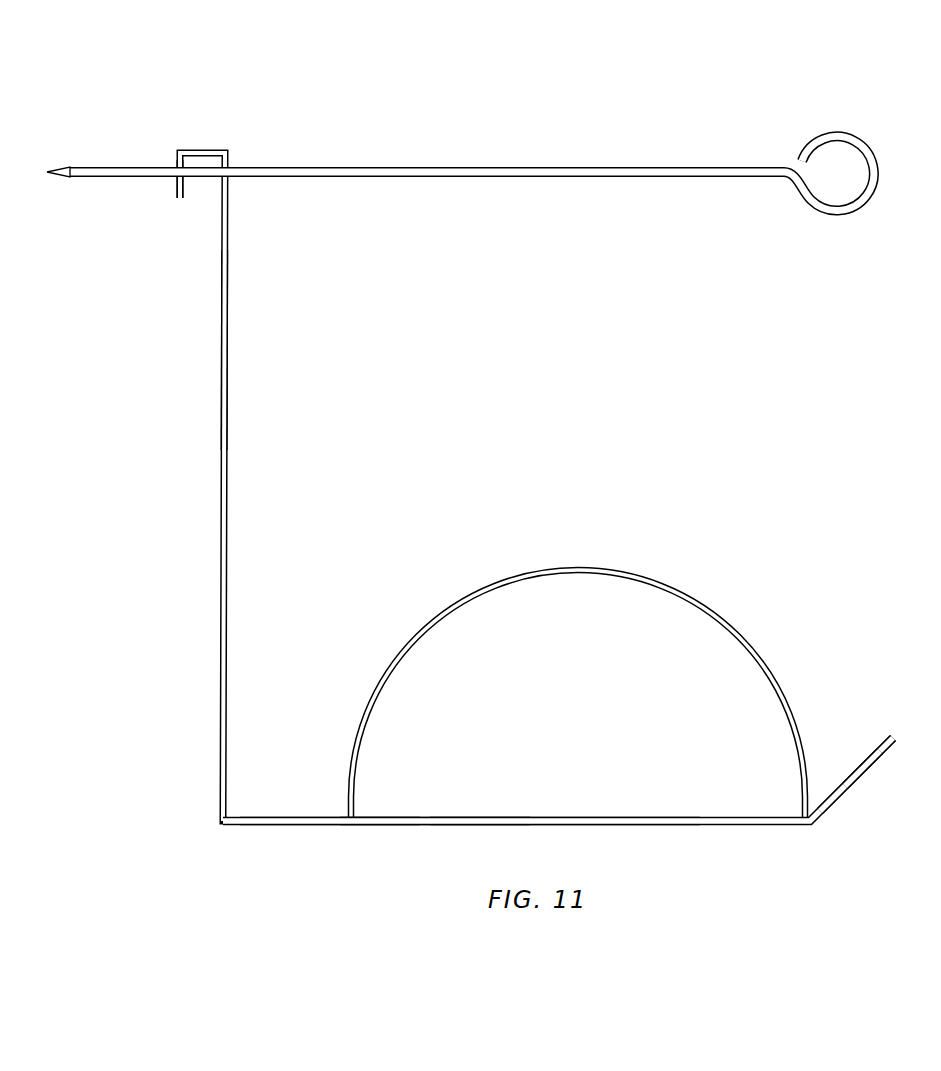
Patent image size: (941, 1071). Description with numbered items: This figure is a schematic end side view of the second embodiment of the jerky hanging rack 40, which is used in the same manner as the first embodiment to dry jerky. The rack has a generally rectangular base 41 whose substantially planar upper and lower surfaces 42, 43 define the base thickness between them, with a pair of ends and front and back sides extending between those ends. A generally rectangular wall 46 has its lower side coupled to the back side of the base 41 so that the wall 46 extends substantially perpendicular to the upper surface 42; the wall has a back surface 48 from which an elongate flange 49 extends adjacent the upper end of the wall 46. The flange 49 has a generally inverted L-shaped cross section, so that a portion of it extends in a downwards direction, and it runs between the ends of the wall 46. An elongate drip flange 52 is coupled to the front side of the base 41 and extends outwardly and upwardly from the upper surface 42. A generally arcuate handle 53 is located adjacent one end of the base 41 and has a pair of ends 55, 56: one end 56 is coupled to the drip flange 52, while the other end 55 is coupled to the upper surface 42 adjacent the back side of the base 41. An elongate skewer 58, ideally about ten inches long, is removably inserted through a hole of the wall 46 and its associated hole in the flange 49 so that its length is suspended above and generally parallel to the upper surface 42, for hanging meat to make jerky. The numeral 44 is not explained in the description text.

The second embodiment of the jerky hanging rack 40 is at (487, 469).
The base 41 is at (391, 833).
The upper surface 42 is at (463, 817).
The lower surface 43 is at (473, 826).
The free end of hook 44 is at (176, 195).
The wall 46 is at (515, 520).
The back surface 48 is at (221, 348).
The flange 49 is at (230, 368).
The drip flange 52 is at (876, 768).
The handle 53 is at (612, 566).
The end 55 is at (262, 816).
The end 56 is at (858, 756).
The skewer 58 is at (491, 170).